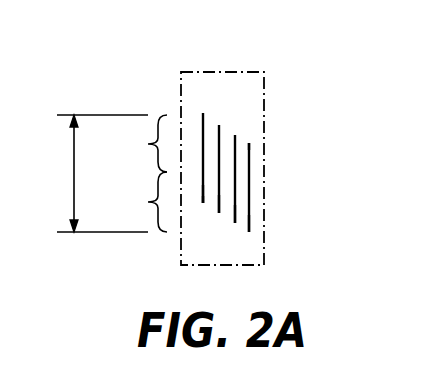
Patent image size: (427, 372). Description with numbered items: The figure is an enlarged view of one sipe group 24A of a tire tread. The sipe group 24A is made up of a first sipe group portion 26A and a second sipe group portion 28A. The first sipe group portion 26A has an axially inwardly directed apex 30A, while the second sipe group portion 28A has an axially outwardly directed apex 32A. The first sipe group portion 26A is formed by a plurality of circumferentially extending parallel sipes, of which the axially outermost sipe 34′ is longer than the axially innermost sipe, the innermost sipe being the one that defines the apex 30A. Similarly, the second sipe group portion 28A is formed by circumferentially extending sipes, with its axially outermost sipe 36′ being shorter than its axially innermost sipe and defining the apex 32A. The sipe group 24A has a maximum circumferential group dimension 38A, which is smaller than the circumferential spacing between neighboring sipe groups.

The sipe group 24A is at (284, 69).
The first sipe group portion 26A is at (137, 143).
The second sipe group portion 28A is at (137, 202).
The axially inwardly directed apex 30A is at (248, 155).
The axially outwardly directed apex 32A is at (149, 242).
The axially outermost sipe 34′ is at (203, 113).
The axially outermost sipe 36′ is at (203, 200).
The maximum circumferential group dimension 38A is at (72, 163).